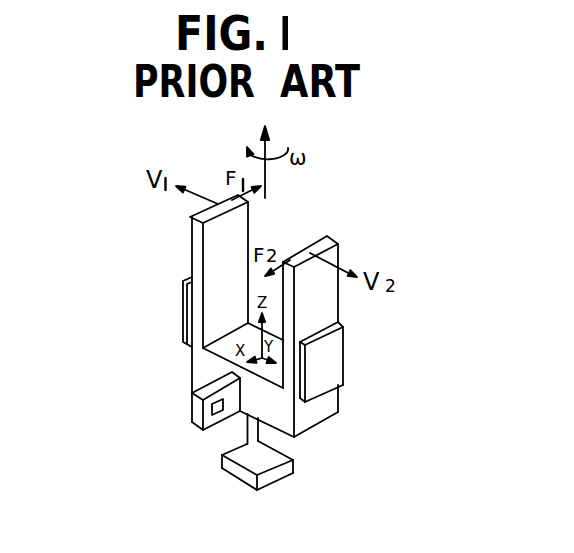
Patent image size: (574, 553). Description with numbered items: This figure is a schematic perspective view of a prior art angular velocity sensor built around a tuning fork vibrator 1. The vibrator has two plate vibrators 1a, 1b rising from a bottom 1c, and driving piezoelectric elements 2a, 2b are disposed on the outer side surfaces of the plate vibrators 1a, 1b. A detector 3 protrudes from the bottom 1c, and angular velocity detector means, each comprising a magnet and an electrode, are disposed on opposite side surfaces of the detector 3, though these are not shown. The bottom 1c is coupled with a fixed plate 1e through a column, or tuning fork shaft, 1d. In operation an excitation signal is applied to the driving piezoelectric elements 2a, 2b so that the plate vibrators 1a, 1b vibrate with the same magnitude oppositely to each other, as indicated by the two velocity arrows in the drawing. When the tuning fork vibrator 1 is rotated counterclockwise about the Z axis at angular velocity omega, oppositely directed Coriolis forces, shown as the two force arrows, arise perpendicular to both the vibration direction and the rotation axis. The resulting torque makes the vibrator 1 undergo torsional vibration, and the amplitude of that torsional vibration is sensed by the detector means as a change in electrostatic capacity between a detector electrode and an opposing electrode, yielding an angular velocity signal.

The tuning fork vibrator 1 is at (280, 430).
The plate vibrator 1a is at (193, 254).
The plate vibrator 1b is at (334, 311).
The bottom 1c is at (202, 368).
The column (tuning fork shaft) 1d is at (247, 430).
The fixed plate 1e is at (240, 474).
The driving piezoelectric element 2a is at (186, 308).
The driving piezoelectric element 2b is at (331, 368).
The detector 3 is at (195, 414).